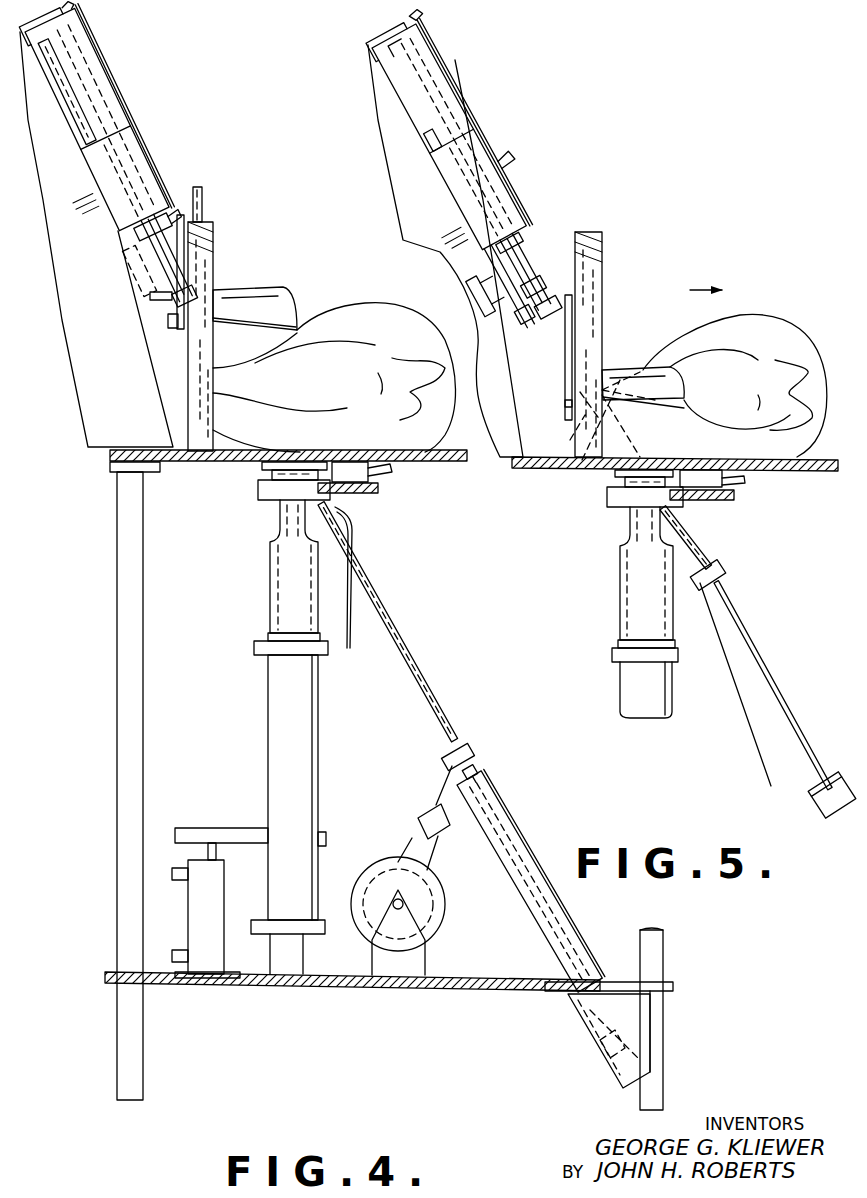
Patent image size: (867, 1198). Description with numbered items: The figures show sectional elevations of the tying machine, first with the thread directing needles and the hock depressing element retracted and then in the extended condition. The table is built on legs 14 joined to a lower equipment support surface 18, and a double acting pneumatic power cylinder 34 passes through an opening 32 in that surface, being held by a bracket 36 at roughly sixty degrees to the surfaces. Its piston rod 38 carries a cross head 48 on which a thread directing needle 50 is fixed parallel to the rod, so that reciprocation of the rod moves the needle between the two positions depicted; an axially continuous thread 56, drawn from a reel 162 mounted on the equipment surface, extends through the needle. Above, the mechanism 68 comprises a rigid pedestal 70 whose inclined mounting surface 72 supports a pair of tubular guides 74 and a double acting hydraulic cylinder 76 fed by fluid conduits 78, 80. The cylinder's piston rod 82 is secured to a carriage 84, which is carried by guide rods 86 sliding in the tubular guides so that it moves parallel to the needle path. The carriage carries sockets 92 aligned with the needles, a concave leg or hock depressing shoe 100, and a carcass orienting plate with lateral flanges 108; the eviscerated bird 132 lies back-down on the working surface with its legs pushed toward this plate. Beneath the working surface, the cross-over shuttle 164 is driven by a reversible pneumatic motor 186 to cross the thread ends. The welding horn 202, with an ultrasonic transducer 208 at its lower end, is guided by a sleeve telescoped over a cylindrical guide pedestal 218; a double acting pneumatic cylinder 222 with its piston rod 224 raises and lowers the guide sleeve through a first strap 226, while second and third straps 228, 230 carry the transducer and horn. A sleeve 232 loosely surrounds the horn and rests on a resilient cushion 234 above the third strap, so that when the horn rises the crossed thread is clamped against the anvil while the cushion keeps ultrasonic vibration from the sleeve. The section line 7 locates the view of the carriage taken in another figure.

In FIG. 5, the section line 7- 7 is at (592, 225).
In FIG. 4, the legs 14 is at (117, 757).
In FIG. 4, the lower equipment support surface 18 is at (465, 970).
In FIG. 4, the opening 32 is at (622, 980).
In FIG. 4, the pneumatic power cylinder 34 is at (510, 815).
In FIG. 5, the pneumatic power cylinder 34 is at (815, 798).
In FIG. 4, the bracket 36 is at (645, 1013).
In FIG. 4, the piston rod 38 is at (478, 762).
In FIG. 5, the piston rod 38 is at (752, 645).
In FIG. 4, the cross head 48 is at (465, 745).
In FIG. 5, the cross head 48 is at (722, 572).
In FIG. 4, the thread directing needle 50 is at (398, 640).
In FIG. 5, the thread directing needle 50 is at (695, 557).
In FIG. 4, the thread 56 is at (352, 541).
In FIG. 5, the thread 56 is at (754, 750).
In FIG. 4, the mechanism 68 is at (104, 120).
In FIG. 5, the mechanism 68 is at (457, 134).
In FIG. 4, the pedestal 70 is at (88, 430).
In FIG. 5, the pedestal 70 is at (388, 176).
In FIG. 4, the inclined mounting surface 72 is at (63, 103).
In FIG. 4, the tubular guides 74 is at (108, 145).
In FIG. 5, the tubular guides 74 is at (460, 160).
In FIG. 4, the double acting hydraulic cylinder 76 is at (88, 50).
In FIG. 5, the double acting hydraulic cylinder 76 is at (447, 85).
In FIG. 5, the fluid conduit 78 is at (432, 22).
In FIG. 5, the fluid conduit 80 is at (522, 182).
In FIG. 4, the piston rod 82 is at (170, 205).
In FIG. 5, the piston rod 82 is at (525, 242).
In FIG. 4, the carriage 84 is at (170, 324).
In FIG. 5, the carriage 84 is at (565, 292).
In FIG. 4, the guide rods 86 is at (140, 225).
In FIG. 5, the guide rods 86 is at (505, 266).
In FIG. 4, the sockets 92 is at (200, 200).
In FIG. 5, the sockets 92 is at (575, 305).
In FIG. 4, the leg or hock depressing shoe 100 is at (257, 290).
In FIG. 5, the leg or hock depressing shoe 100 is at (640, 370).
In FIG. 4, the lateral flanges 108 is at (215, 238).
In FIG. 5, the lateral flanges 108 is at (605, 240).
In FIG. 4, the eviscerated bird 132 is at (363, 305).
In FIG. 5, the eviscerated bird 132 is at (770, 322).
In FIG. 4, the reel 162 is at (446, 912).
In FIG. 4, the cross-over shuttle 164 is at (258, 492).
In FIG. 5, the cross-over shuttle 164 is at (606, 497).
In FIG. 4, the reversible pneumatic motor 186 is at (345, 478).
In FIG. 5, the reversible pneumatic motor 186 is at (735, 490).
In FIG. 4, the welding horn 202 is at (277, 585).
In FIG. 4, the ultrasonic transducer 208 is at (268, 702).
In FIG. 4, the cylindrical guide pedestal 218 is at (280, 975).
In FIG. 4, the double acting pneumatic cylinder 222 is at (210, 965).
In FIG. 4, the piston rod 224 is at (198, 848).
In FIG. 4, the first strap 226 is at (242, 832).
In FIG. 4, the second strap 228 is at (302, 920).
In FIG. 4, the third strap 230 is at (255, 648).
In FIG. 4, the sleeve 232 is at (270, 542).
In FIG. 5, the sleeve 232 is at (620, 570).
In FIG. 4, the cushion 234 is at (268, 638).